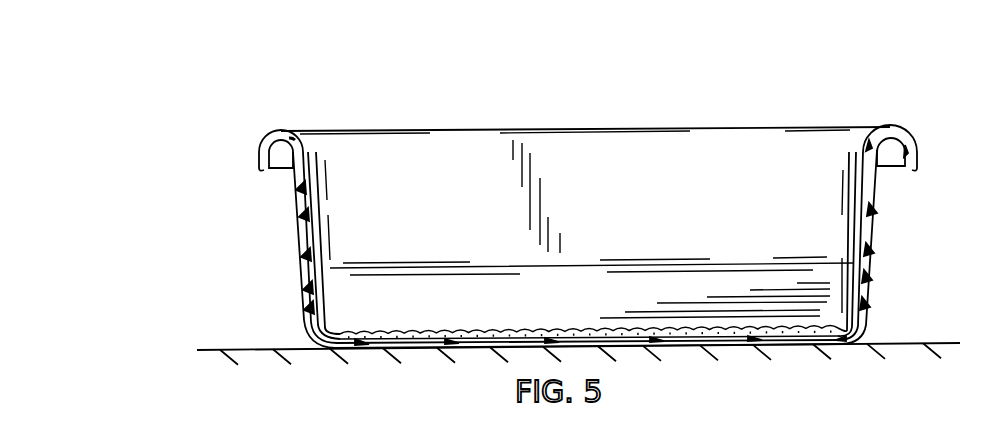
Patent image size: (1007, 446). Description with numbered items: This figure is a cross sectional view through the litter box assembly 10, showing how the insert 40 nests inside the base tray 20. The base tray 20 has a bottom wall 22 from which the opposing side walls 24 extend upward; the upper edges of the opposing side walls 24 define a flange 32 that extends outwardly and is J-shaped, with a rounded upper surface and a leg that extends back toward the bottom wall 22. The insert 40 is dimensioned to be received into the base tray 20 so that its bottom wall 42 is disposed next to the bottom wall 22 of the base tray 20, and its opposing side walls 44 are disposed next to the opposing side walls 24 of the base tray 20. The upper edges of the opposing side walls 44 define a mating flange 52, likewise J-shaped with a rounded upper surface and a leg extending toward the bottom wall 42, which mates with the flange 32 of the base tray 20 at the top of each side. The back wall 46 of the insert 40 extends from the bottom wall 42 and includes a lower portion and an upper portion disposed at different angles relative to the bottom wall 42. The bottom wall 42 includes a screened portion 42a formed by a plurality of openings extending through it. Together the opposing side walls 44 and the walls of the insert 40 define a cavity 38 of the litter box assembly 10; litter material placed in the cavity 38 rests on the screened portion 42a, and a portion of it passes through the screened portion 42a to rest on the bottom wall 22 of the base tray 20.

The litter box assembly 10 is at (792, 64).
The base tray 20 is at (884, 298).
The bottom wall 22 is at (425, 343).
The opposing side walls 24 is at (311, 234).
The flange 32 is at (283, 130).
The cavity 38 is at (580, 196).
The insert 40 is at (702, 120).
The bottom wall 42 is at (357, 340).
The screened portion 42a is at (472, 332).
The opposing side walls 44 is at (891, 128).
The back wall 46 is at (466, 172).
The mating flange 52 is at (288, 128).